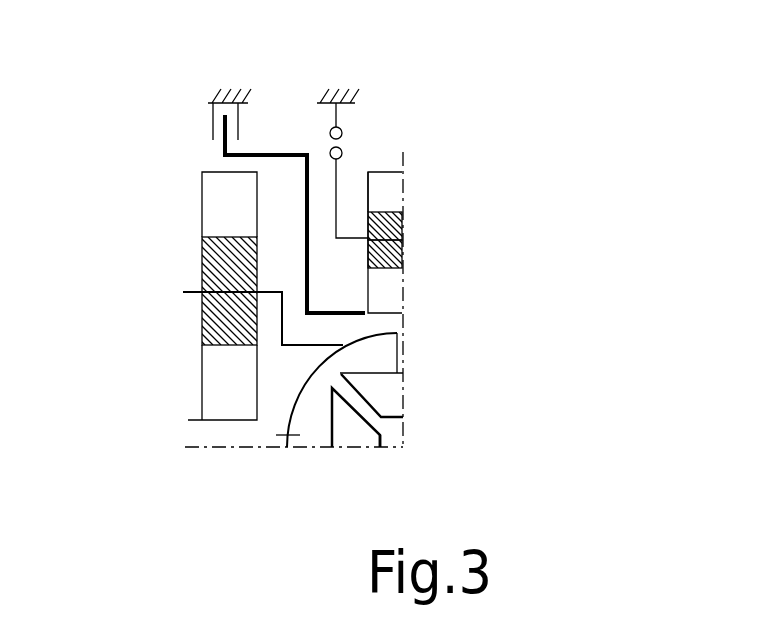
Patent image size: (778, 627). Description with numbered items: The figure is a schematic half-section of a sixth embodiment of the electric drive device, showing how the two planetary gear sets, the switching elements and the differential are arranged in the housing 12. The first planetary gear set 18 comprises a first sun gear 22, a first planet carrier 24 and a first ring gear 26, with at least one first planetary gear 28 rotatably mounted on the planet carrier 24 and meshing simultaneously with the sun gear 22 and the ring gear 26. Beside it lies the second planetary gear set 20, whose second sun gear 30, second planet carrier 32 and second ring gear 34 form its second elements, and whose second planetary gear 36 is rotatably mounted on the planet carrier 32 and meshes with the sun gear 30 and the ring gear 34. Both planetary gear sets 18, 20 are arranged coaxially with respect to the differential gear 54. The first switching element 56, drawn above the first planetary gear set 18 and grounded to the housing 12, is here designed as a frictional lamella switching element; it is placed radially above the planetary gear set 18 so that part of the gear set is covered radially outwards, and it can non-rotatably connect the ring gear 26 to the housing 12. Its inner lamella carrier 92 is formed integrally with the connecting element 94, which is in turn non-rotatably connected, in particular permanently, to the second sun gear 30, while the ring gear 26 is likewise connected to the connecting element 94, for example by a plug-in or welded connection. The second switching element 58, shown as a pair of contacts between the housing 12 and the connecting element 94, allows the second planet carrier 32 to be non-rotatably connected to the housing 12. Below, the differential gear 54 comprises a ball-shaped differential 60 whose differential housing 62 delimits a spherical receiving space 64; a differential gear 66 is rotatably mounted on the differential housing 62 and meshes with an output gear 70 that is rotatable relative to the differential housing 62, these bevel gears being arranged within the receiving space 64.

The housing 12 is at (242, 88).
The first planetary gear set 18 is at (200, 305).
The second planetary gear set 20 is at (444, 209).
The first sun gear 22 is at (227, 390).
The first planet carrier 24 is at (212, 313).
The first ring gear 26 is at (210, 202).
The first planetary gear 28 is at (210, 258).
The second sun gear 30 is at (395, 285).
The second planet carrier 32 is at (393, 230).
The second ring gear 34 is at (390, 193).
The second planetary gear 36 is at (393, 253).
The differential gear 54 is at (436, 421).
The first switching element 56 is at (201, 128).
The second switching element 58 is at (351, 126).
The ball-shaped differential 60 is at (343, 441).
The differential housing 62 is at (378, 342).
The receiving space 64 is at (302, 399).
The differential gear 66 is at (385, 398).
The output gear 70 is at (357, 437).
The inner lamella carrier 92 is at (268, 152).
The connecting element 94 is at (325, 181).